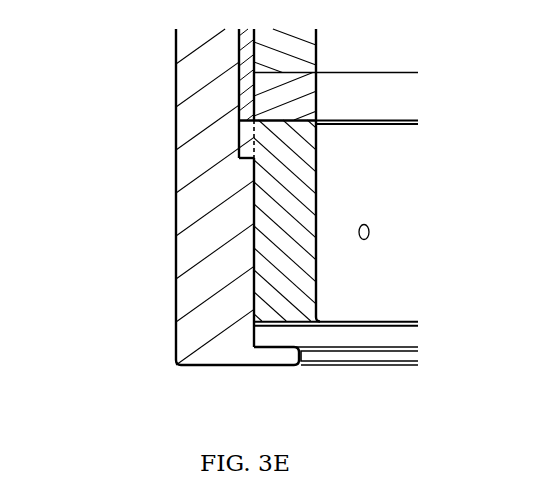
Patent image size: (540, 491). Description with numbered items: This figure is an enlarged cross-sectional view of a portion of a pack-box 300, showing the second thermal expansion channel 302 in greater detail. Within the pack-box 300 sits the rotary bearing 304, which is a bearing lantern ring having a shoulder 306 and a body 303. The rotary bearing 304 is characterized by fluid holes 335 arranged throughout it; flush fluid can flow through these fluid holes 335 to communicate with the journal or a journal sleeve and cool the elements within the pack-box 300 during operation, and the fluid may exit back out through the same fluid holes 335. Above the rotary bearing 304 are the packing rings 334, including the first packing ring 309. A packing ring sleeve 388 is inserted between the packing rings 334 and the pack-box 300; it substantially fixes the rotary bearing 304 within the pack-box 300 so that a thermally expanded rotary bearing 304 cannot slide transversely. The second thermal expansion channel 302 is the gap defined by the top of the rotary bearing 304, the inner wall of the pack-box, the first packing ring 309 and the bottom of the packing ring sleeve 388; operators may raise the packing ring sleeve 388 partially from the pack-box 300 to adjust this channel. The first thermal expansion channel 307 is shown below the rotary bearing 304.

The pack-box 300 is at (187, 215).
The second thermal expansion channel 302 is at (239, 119).
The body 303 is at (280, 275).
The rotary bearing 304 is at (396, 191).
The shoulder 306 is at (240, 137).
The first thermal expansion channel 307 is at (390, 335).
The first packing ring 309 is at (284, 93).
The packing rings 334 is at (286, 53).
The fluid holes 335 is at (372, 232).
The packing ring sleeve 388 is at (253, 103).